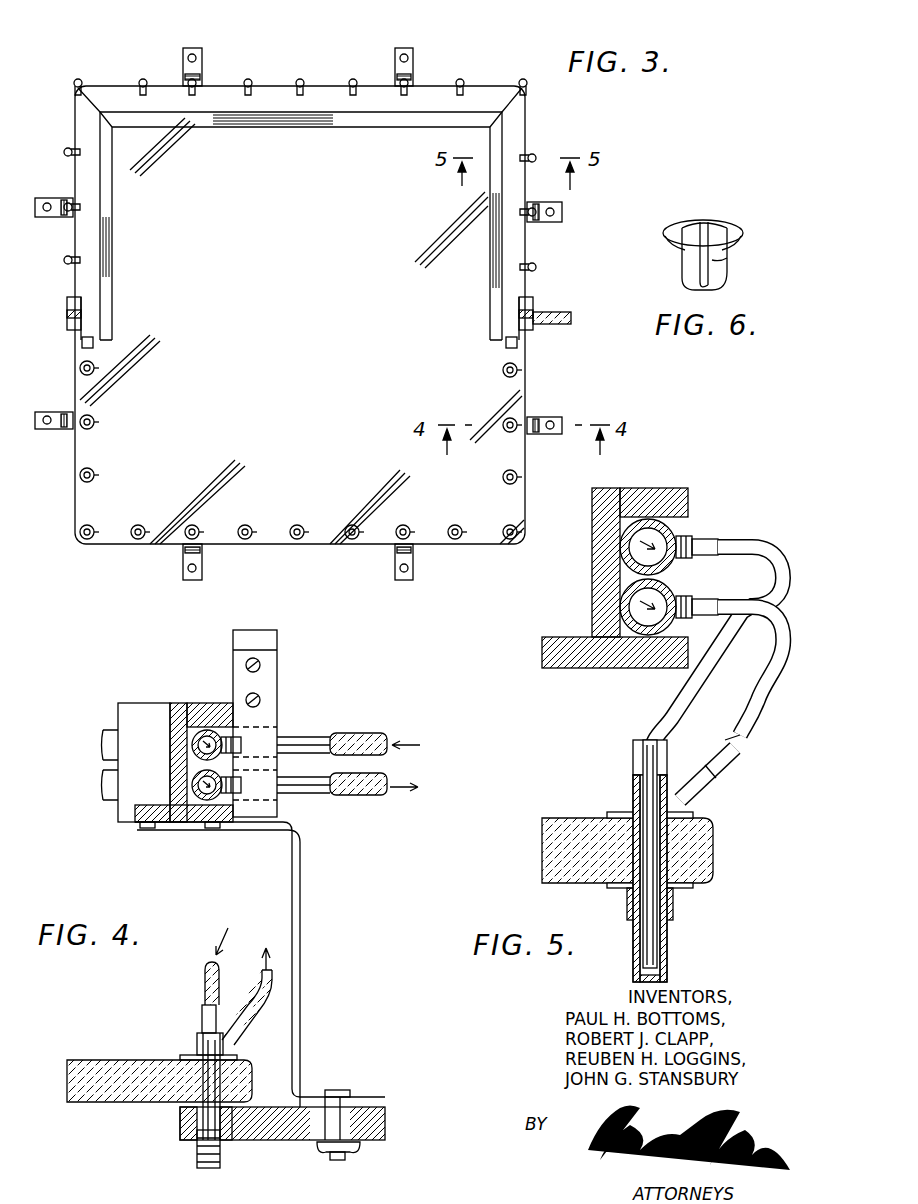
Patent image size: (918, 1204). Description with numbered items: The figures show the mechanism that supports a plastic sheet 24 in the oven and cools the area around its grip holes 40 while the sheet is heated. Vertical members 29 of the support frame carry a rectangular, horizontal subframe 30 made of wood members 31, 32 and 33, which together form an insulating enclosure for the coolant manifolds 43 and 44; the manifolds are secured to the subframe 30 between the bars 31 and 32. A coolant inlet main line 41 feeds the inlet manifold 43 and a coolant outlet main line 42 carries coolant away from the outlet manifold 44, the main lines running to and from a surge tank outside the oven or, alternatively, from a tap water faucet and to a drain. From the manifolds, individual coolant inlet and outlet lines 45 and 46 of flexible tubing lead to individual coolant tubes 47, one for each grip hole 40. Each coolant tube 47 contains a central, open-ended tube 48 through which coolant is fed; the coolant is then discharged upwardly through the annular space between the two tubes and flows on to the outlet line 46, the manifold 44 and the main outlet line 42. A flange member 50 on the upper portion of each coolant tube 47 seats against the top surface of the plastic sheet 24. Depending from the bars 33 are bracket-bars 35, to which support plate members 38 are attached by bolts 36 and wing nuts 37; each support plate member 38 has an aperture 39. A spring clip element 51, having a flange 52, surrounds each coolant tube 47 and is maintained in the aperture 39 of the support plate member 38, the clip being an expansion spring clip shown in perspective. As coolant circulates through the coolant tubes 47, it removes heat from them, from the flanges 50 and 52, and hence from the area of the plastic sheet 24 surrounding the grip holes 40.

In FIG. 3, the plastic sheet 24 is at (300, 315).
In FIG. 4, the plastic sheet 24 is at (88, 1068).
In FIG. 5, the plastic sheet 24 is at (700, 853).
In FIG. 3, the vertical members 29 is at (66, 313).
In FIG. 4, the vertical members 29 is at (268, 641).
In FIG. 3, the subframe 30 is at (325, 195).
In FIG. 4, the subframe 30 is at (175, 763).
In FIG. 5, the subframe 30 is at (611, 578).
In FIG. 3, the wood member 31 is at (258, 108).
In FIG. 4, the wood member 31 is at (200, 702).
In FIG. 5, the wood member 31 is at (650, 490).
In FIG. 4, the wood member 32 is at (178, 742).
In FIG. 5, the wood member 32 is at (592, 520).
In FIG. 3, the wood member 33 is at (250, 127).
In FIG. 4, the wood member 33 is at (180, 823).
In FIG. 5, the wood member 33 is at (562, 668).
In FIG. 3, the bracket-bars 35 is at (395, 62).
In FIG. 4, the bracket-bars 35 is at (301, 920).
In FIG. 4, the bolts 36 is at (342, 1105).
In FIG. 4, the wing nuts 37 is at (355, 1155).
In FIG. 3, the support plate members 38 is at (405, 78).
In FIG. 4, the support plate members 38 is at (290, 1140).
In FIG. 4, the aperture 39 is at (198, 1143).
In FIG. 4, the grip holes 40 is at (222, 1069).
In FIG. 5, the grip holes 40 is at (655, 830).
In FIG. 3, the coolant inlet main line 41 is at (562, 325).
In FIG. 4, the coolant inlet main line 41 is at (350, 733).
In FIG. 4, the coolant outlet main line 42 is at (352, 797).
In FIG. 3, the coolant inlet manifold 43 is at (81, 343).
In FIG. 4, the coolant inlet manifold 43 is at (209, 728).
In FIG. 5, the coolant inlet manifold 43 is at (676, 522).
In FIG. 4, the coolant outlet manifold 44 is at (103, 785).
In FIG. 5, the coolant outlet manifold 44 is at (676, 584).
In FIG. 3, the individual coolant inlet line 45 is at (80, 84).
In FIG. 4, the individual coolant inlet line 45 is at (205, 977).
In FIG. 5, the individual coolant inlet line 45 is at (633, 722).
In FIG. 3, the individual coolant outlet line 46 is at (73, 92).
In FIG. 4, the individual coolant outlet line 46 is at (262, 1010).
In FIG. 5, the individual coolant outlet line 46 is at (745, 705).
In FIG. 4, the coolant tube 47 is at (222, 1088).
In FIG. 5, the coolant tube 47 is at (665, 878).
In FIG. 4, the central open-ended tube 48 is at (202, 1015).
In FIG. 5, the central open-ended tube 48 is at (657, 903).
In FIG. 3, the flange member 50 is at (80, 372).
In FIG. 4, the flange member 50 is at (190, 1055).
In FIG. 5, the flange member 50 is at (625, 812).
In FIG. 4, the spring clip element 51 is at (232, 1130).
In FIG. 5, the spring clip element 51 is at (628, 912).
In FIG. 6, the spring clip element 51 is at (692, 258).
In FIG. 4, the flange 52 is at (180, 1118).
In FIG. 5, the flange 52 is at (612, 888).
In FIG. 6, the flange 52 is at (706, 222).